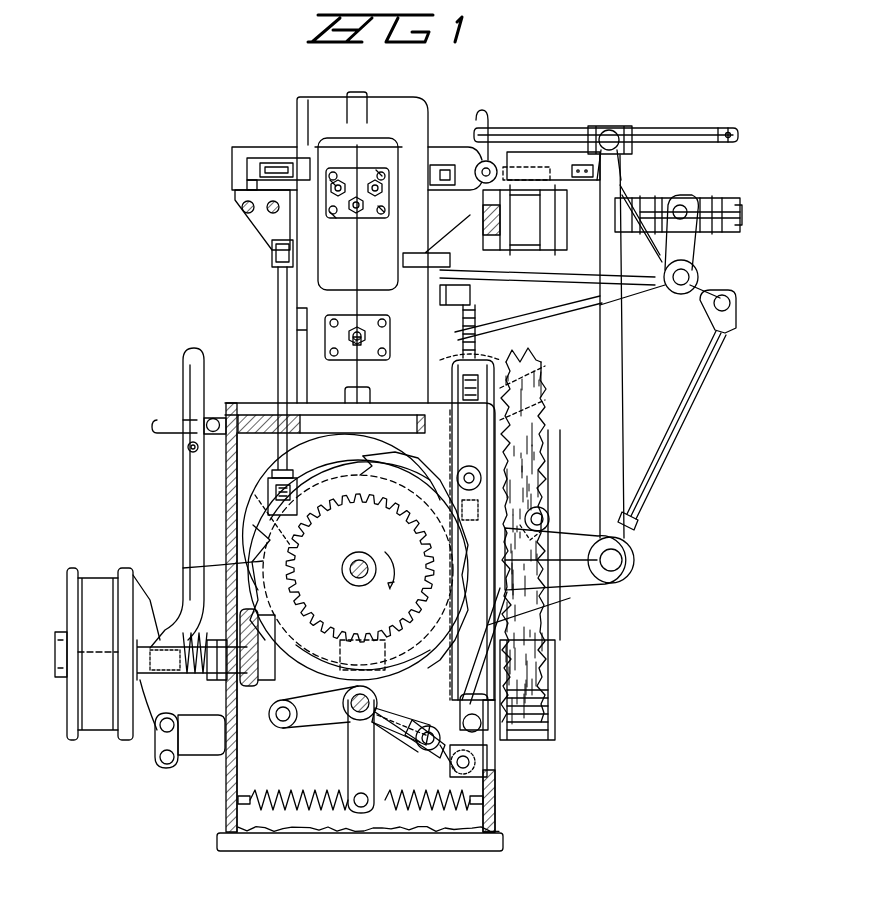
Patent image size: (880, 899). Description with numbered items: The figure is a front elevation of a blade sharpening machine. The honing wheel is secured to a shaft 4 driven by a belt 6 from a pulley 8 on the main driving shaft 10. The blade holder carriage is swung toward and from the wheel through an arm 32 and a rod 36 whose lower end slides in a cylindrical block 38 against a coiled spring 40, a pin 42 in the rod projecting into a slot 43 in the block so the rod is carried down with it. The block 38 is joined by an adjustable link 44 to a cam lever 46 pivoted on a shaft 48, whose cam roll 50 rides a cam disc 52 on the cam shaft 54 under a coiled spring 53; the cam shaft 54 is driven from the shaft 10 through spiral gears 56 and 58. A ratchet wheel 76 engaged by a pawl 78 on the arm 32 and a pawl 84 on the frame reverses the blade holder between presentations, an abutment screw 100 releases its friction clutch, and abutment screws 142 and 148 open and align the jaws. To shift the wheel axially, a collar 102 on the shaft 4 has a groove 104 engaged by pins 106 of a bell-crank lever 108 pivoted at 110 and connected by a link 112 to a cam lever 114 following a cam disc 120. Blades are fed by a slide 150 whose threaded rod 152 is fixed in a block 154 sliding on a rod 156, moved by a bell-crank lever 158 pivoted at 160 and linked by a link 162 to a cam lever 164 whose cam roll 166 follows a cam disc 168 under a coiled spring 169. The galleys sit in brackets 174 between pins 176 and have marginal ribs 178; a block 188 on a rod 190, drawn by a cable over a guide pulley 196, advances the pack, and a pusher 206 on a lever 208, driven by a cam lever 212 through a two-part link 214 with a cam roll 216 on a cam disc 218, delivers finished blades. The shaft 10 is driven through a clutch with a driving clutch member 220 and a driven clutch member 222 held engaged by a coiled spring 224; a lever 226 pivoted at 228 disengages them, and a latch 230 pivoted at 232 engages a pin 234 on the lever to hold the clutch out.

The shaft 4 is at (622, 198).
The belt 6 is at (543, 449).
The pulley 8 is at (552, 679).
The main driving shaft 10 is at (240, 699).
The arm 32 is at (488, 278).
The rod 36 is at (522, 331).
The cylindrical block 38 is at (450, 370).
The coiled spring 40 is at (546, 399).
The pin 42 is at (490, 358).
The slot 43 is at (548, 366).
The link 44 is at (482, 667).
The cam lever 46 is at (345, 729).
The shaft 48 is at (380, 749).
The cam roll 50 is at (270, 719).
The cam disc 52 is at (366, 474).
The coiled spring 53 is at (302, 810).
The cam shaft 54 is at (356, 553).
The spiral gear 56 is at (268, 511).
The spiral gear 58 is at (343, 695).
The ratchet wheel 76 is at (475, 297).
The pawl 78 is at (450, 262).
The pawl 84 is at (478, 317).
The abutment screw 100 is at (360, 322).
The collar 102 is at (690, 187).
The central groove 104 is at (672, 195).
The pins 106 is at (693, 241).
The bell-crank lever 108 is at (698, 261).
The pivot 110 is at (680, 285).
The link 112 is at (680, 391).
The cam lever 114 is at (445, 773).
The cam disc 120 is at (446, 478).
The abutment screw 142 is at (357, 206).
The adjustable abutment screws 148 is at (340, 205).
The slide 150 is at (527, 160).
The threaded rod 152 is at (640, 128).
The block 154 is at (612, 127).
The rod 156 is at (506, 129).
The bell-crank lever 158 is at (568, 521).
The pivot 160 is at (623, 559).
The link 162 is at (543, 612).
The cam lever 164 is at (397, 733).
The cam roll 166 is at (415, 630).
The cam disc 168 is at (380, 480).
The coiled spring 169 is at (484, 778).
The brackets 174 is at (255, 205).
The pins 176 is at (250, 182).
The marginal ribs 178 is at (246, 170).
The block 188 is at (470, 147).
The rod 190 is at (492, 124).
The guide pulley 196 is at (520, 235).
The pusher 206 is at (290, 163).
The lever 208 is at (280, 260).
The cam lever 212 is at (313, 725).
The two-part link 214 is at (278, 451).
The cam roll 216 is at (454, 707).
The cam disc 218 is at (207, 567).
The driving clutch member 220 is at (122, 568).
The driven clutch member 222 is at (140, 570).
The coiled spring 224 is at (201, 635).
The lever 226 is at (172, 701).
The pivot 228 is at (167, 768).
The latch 230 is at (172, 402).
The pivot 232 is at (214, 418).
The pin 234 is at (188, 449).